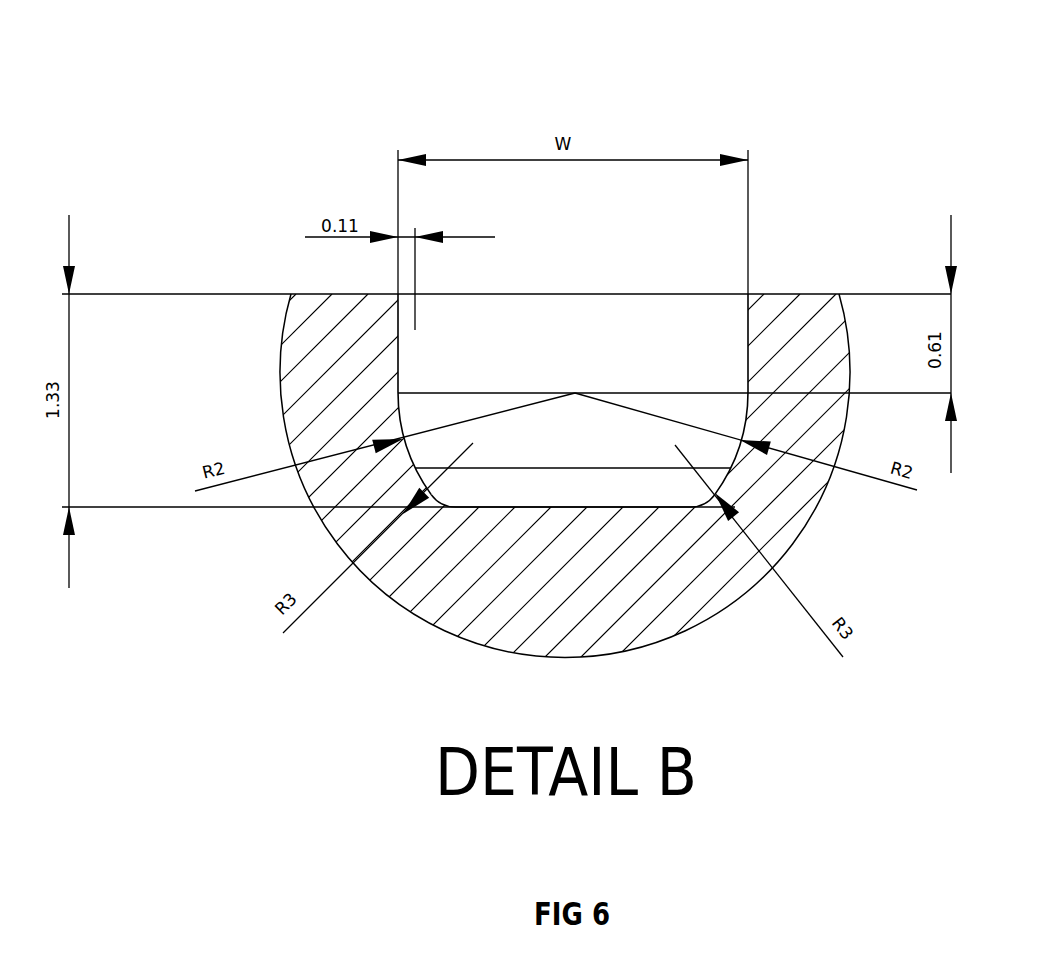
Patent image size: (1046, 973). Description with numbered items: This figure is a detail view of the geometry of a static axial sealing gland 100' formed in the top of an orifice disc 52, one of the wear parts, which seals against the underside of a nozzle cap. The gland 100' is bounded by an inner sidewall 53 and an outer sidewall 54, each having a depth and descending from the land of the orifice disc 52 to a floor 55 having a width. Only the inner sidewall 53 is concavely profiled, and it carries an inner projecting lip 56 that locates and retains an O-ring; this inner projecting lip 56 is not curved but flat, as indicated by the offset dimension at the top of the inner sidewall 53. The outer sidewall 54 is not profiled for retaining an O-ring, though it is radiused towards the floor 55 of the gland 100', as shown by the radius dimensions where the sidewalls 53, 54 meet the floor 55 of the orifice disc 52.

The static axial sealing gland 100' is at (470, 61).
The orifice disc 52 is at (523, 477).
The inner sidewall 53 is at (400, 390).
The outer sidewall 54 is at (748, 388).
The floor 55 is at (524, 508).
The inner projecting lip 56 is at (407, 314).